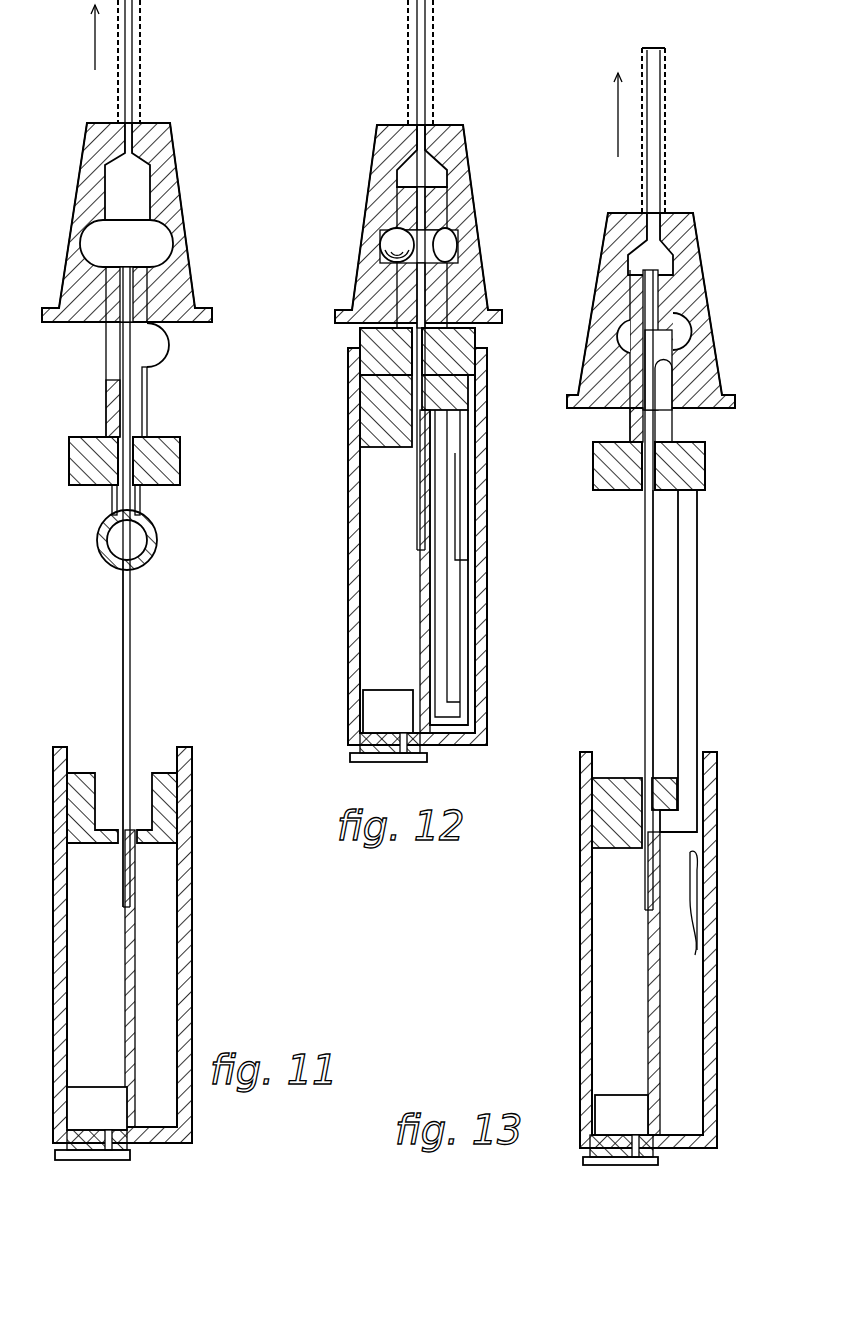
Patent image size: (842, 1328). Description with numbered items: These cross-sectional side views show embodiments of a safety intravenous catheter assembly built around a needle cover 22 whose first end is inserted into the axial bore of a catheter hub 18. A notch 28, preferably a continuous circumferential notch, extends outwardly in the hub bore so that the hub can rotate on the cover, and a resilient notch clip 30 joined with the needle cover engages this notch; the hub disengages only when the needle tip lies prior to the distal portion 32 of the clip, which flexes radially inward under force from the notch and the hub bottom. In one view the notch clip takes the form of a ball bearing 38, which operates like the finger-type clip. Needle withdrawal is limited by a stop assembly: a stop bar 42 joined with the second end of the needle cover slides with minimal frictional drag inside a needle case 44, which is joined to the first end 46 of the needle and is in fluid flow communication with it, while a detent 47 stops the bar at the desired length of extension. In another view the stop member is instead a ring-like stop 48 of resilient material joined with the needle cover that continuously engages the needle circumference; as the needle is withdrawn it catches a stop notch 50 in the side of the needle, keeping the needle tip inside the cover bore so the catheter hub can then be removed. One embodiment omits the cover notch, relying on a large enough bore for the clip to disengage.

In FIG. 11, the catheter hub 18 is at (173, 163).
In FIG. 13, the catheter hub 18 is at (703, 260).
In FIG. 11, the needle cover 22 is at (180, 463).
In FIG. 12, the needle cover 22 is at (417, 351).
In FIG. 13, the needle cover 22 is at (707, 467).
In FIG. 11, the notch 28 is at (97, 230).
In FIG. 13, the notch 28 is at (617, 330).
In FIG. 11, the notch clip 30 is at (163, 352).
In FIG. 12, the notch clip 30 is at (387, 240).
In FIG. 13, the notch clip 30 is at (700, 338).
In FIG. 12, the distal portion of the notch clip 32 is at (365, 207).
In FIG. 12, the ball bearing 38 is at (382, 263).
In FIG. 12, the stop bar 42 is at (449, 567).
In FIG. 13, the stop bar 42 is at (695, 680).
In FIG. 12, the needle case 44 is at (417, 546).
In FIG. 13, the needle case 44 is at (580, 900).
In FIG. 13, the first end of the needle 46 is at (643, 690).
In FIG. 12, the detent 47 is at (461, 506).
In FIG. 13, the detent 47 is at (700, 978).
In FIG. 11, the ring-like stop 48 is at (153, 535).
In FIG. 11, the stop notch 50 is at (120, 563).